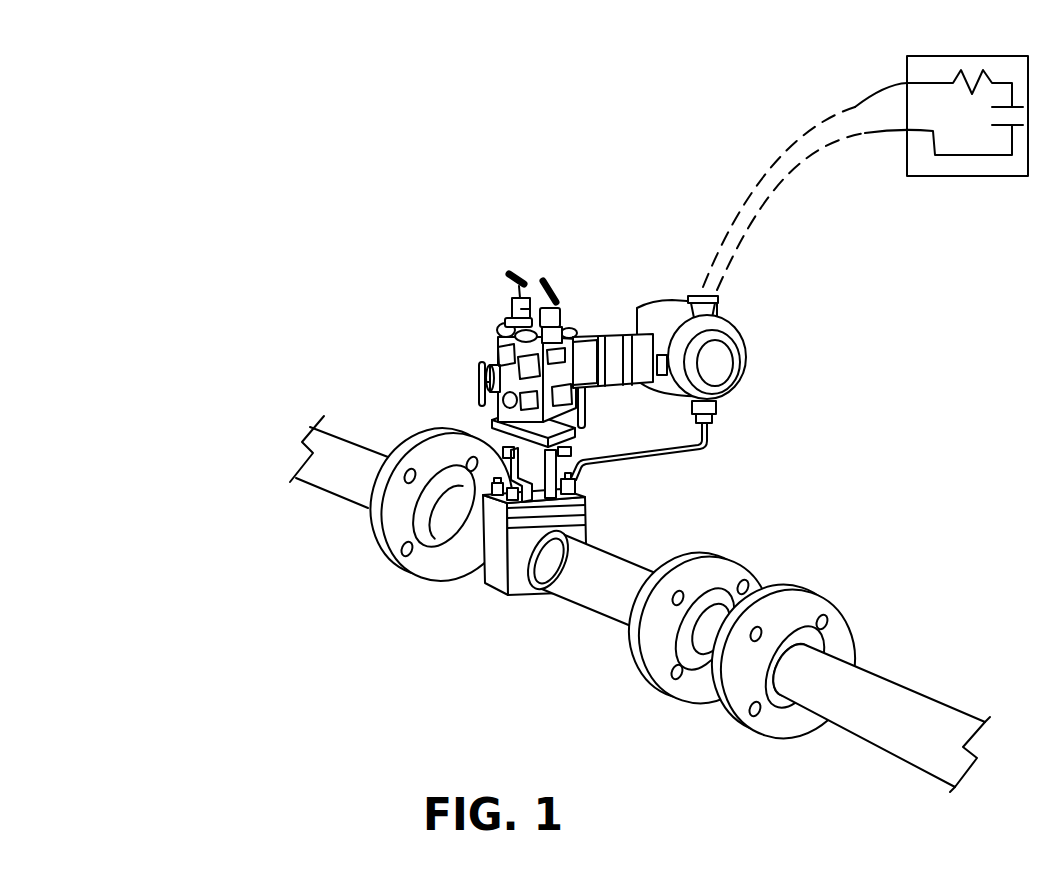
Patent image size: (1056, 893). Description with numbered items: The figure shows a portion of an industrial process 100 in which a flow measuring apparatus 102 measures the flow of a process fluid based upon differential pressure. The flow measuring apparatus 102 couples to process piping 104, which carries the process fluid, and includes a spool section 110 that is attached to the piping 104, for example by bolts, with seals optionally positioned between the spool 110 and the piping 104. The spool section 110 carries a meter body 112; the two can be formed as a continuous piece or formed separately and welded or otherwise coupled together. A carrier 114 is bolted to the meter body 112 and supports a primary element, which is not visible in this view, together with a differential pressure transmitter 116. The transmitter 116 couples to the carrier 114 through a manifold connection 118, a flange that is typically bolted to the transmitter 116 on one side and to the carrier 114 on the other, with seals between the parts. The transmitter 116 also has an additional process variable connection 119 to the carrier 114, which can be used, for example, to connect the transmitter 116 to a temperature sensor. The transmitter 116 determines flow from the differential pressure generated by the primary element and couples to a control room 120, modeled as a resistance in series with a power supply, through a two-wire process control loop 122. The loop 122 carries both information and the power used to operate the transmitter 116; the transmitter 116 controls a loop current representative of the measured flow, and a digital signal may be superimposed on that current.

The industrial process 100 is at (590, 396).
The flow measuring apparatus 102 is at (615, 497).
The process piping 104 is at (347, 439).
The spool section 110 is at (640, 563).
The meter body 112 is at (461, 547).
The carrier 114 is at (492, 489).
The differential pressure transmitter 116 is at (748, 350).
The manifold connection 118 is at (585, 309).
The additional process variable connection 119 is at (705, 447).
The control room 120 is at (937, 55).
The two-wire process control loop 122 is at (750, 215).